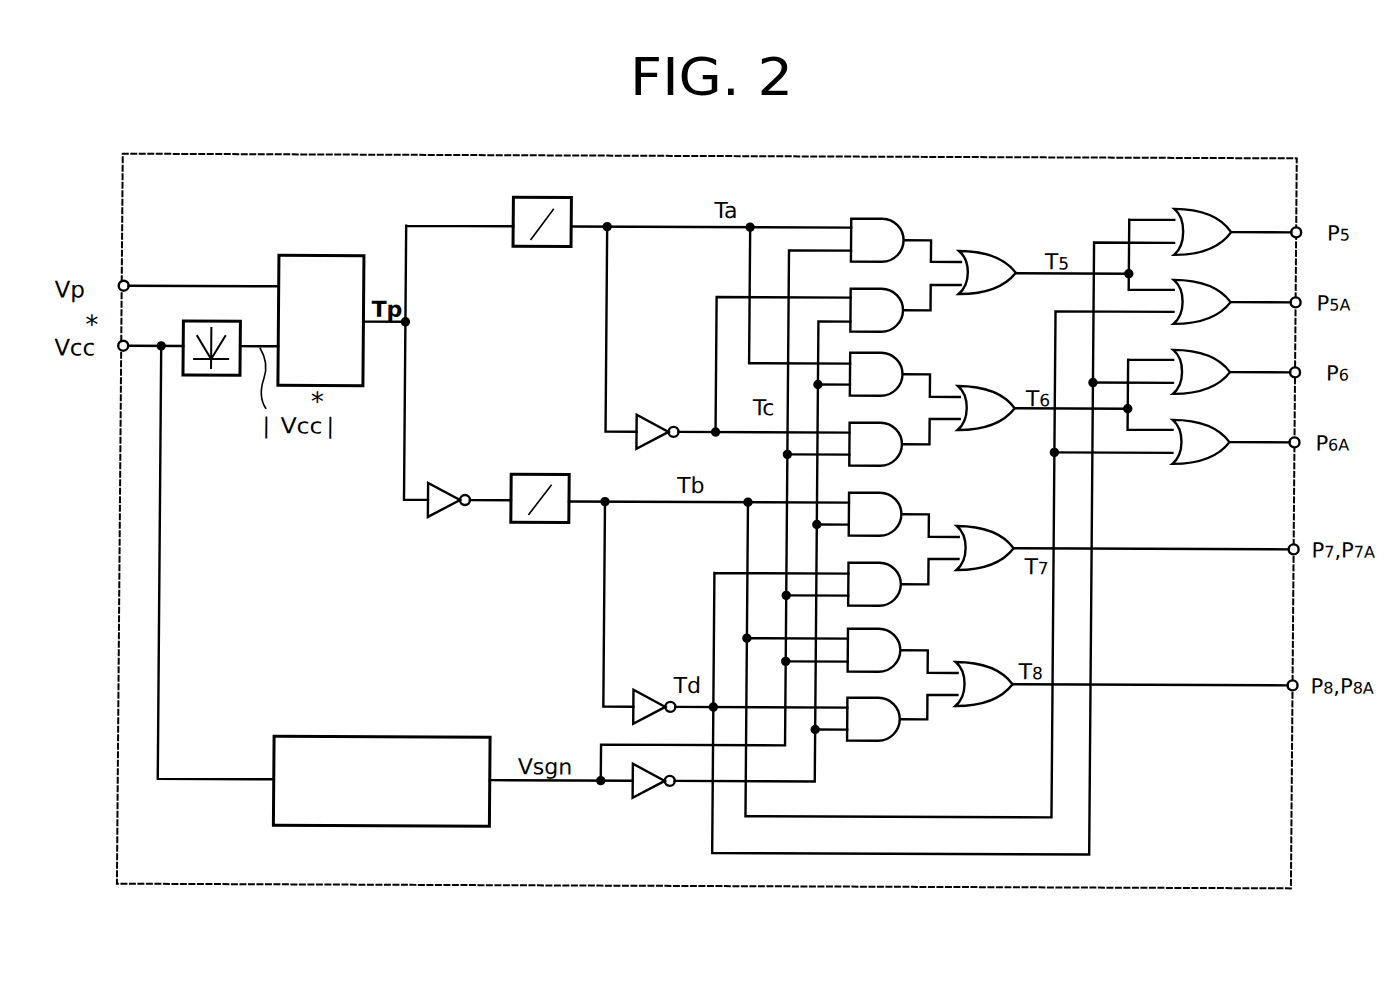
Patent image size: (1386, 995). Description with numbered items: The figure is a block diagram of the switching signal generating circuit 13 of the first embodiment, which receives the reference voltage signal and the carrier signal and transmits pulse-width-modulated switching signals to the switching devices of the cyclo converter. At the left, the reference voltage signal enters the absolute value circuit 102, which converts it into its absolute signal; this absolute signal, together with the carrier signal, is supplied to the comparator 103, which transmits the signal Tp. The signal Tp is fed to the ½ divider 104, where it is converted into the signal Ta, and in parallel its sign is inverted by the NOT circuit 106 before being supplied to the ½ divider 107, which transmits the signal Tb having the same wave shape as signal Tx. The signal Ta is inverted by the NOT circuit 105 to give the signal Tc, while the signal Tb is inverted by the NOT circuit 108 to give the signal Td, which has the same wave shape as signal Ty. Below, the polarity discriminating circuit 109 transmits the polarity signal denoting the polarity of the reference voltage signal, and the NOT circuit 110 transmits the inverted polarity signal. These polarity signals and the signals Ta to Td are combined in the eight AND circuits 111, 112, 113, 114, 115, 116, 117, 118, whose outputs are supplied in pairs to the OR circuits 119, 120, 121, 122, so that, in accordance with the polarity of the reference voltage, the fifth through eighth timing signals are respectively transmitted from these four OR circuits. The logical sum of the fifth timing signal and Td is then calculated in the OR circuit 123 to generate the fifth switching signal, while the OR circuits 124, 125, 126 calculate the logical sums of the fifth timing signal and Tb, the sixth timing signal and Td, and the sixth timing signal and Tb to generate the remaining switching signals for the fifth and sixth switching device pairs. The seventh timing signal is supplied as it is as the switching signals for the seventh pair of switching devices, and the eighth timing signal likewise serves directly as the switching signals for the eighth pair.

The switching signal generating circuit 13 is at (1134, 156).
The absolute value circuit 102 is at (204, 323).
The comparator 103 is at (322, 257).
The ½ divider 104 is at (572, 199).
The NOT circuit 105 is at (660, 413).
The NOT circuit 106 is at (437, 483).
The ½ divider 107 is at (538, 475).
The NOT circuit 108 is at (648, 696).
The polarity discriminating circuit 109 is at (396, 738).
The NOT circuit 110 is at (661, 789).
The AND circuit 111 is at (880, 216).
The AND circuit 112 is at (863, 287).
The AND circuit 113 is at (880, 351).
The AND circuit 114 is at (861, 422).
The AND circuit 115 is at (876, 491).
The AND circuit 116 is at (861, 567).
The AND circuit 117 is at (876, 626).
The AND circuit 118 is at (861, 702).
The OR circuit 119 is at (1004, 243).
The OR circuit 120 is at (1004, 378).
The OR circuit 121 is at (1001, 518).
The OR circuit 122 is at (1001, 655).
The OR circuit 123 is at (1204, 211).
The OR circuit 124 is at (1204, 281).
The OR circuit 125 is at (1204, 351).
The OR circuit 126 is at (1204, 421).